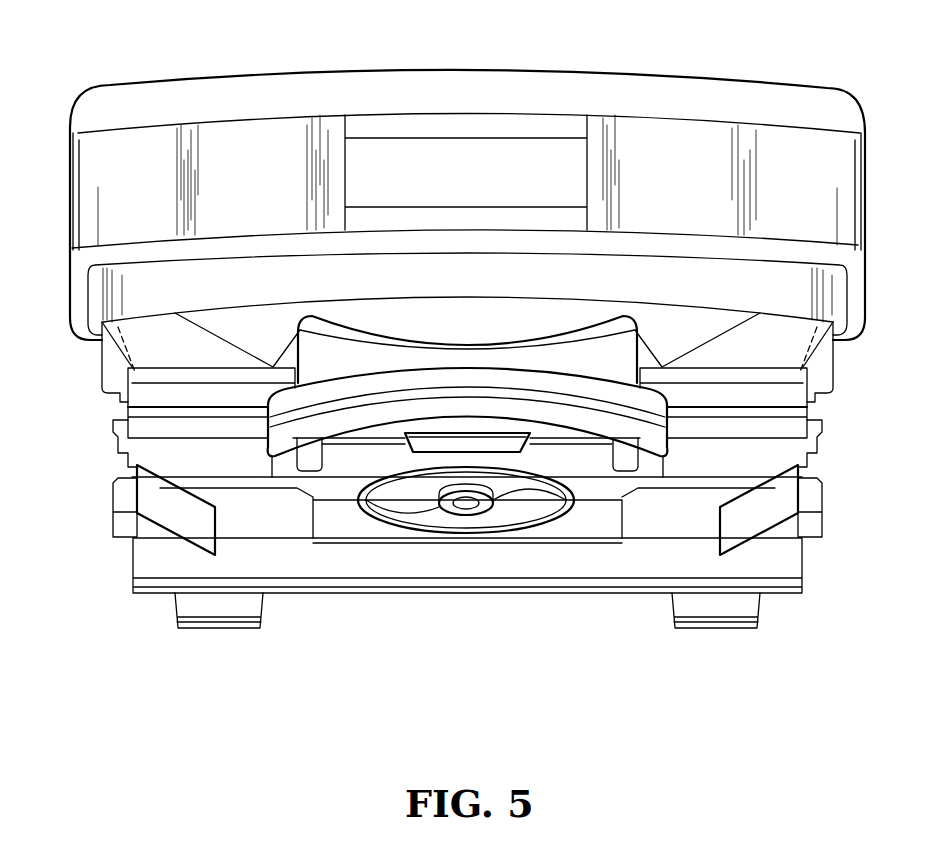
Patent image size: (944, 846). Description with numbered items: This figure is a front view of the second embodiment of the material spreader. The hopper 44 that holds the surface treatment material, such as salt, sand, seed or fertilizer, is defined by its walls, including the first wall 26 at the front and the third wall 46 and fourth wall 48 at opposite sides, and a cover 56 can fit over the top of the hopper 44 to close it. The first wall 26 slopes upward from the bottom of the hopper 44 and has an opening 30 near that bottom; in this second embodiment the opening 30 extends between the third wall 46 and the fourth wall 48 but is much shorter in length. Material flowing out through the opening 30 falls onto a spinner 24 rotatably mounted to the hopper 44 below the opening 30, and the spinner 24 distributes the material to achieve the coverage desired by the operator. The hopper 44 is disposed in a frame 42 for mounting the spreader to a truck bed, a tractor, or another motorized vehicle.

The first wall 26 is at (240, 153).
The cover 56 is at (465, 72).
The hopper 44 is at (100, 160).
The third wall 46 is at (68, 193).
The fourth wall 48 is at (865, 198).
The frame 42 is at (132, 465).
The spinner 24 is at (415, 518).
The opening 30 is at (490, 438).